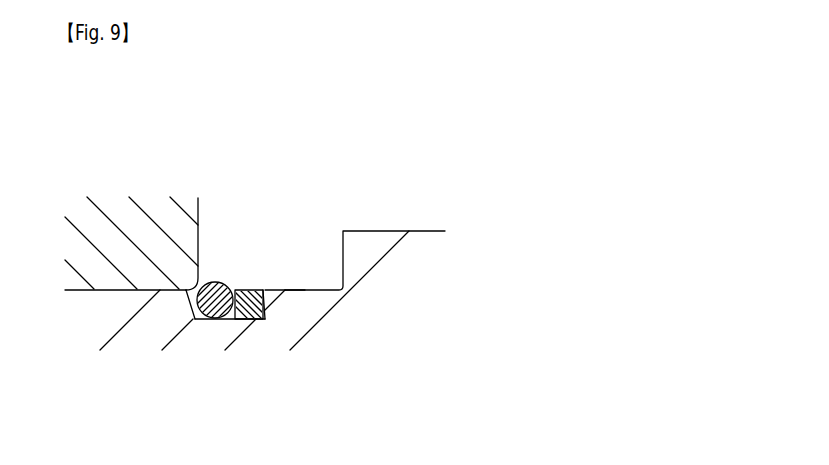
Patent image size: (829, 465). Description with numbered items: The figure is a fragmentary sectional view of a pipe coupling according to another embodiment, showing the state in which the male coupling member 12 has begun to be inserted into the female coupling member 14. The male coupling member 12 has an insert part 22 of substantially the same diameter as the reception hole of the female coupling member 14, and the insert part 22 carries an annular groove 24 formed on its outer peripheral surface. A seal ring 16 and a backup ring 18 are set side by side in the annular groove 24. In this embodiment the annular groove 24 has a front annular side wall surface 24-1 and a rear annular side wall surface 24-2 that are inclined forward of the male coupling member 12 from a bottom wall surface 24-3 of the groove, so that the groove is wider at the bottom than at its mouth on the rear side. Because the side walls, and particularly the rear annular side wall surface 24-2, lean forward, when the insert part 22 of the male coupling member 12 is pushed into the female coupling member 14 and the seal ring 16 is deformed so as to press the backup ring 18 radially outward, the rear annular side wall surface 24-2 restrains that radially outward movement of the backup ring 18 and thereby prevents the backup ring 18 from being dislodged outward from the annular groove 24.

The male coupling member 12 is at (398, 173).
The female coupling member 14 is at (118, 153).
The seal ring 16 is at (218, 282).
The backup ring 18 is at (244, 290).
The insert part 22 is at (295, 290).
The annular groove 24 is at (207, 294).
The front annular side wall surface 24-1 is at (190, 321).
The rear annular side wall surface 24-2 is at (258, 320).
The bottom wall surface 24-3 is at (231, 320).